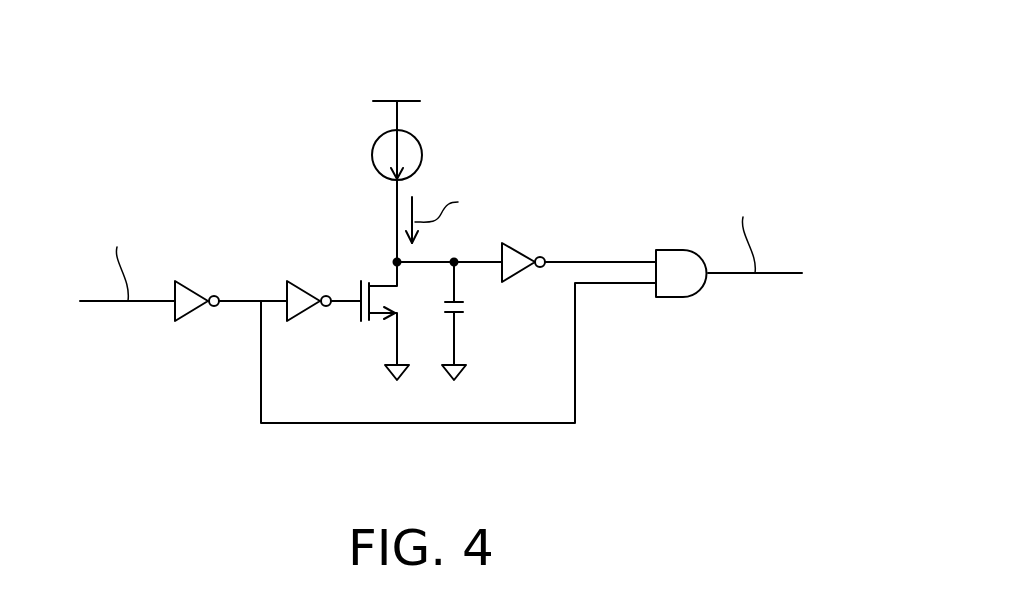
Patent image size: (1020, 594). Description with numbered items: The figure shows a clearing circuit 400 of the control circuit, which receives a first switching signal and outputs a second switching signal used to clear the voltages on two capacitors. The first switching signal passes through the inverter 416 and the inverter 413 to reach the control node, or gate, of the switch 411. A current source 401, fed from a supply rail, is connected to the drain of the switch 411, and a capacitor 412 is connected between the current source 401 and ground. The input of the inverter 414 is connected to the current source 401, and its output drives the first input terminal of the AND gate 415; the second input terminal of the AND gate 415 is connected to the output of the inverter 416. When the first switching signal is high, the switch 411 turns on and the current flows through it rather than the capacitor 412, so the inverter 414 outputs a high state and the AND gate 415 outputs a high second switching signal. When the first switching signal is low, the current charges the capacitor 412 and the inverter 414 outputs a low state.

The clearing circuit 400 is at (823, 70).
The current source 401 is at (422, 181).
The switch 411 is at (369, 321).
The capacitor 412 is at (479, 321).
The inverter 413 is at (303, 279).
The inverter 414 is at (522, 244).
The AND gate 415 is at (681, 252).
The inverter 416 is at (191, 279).